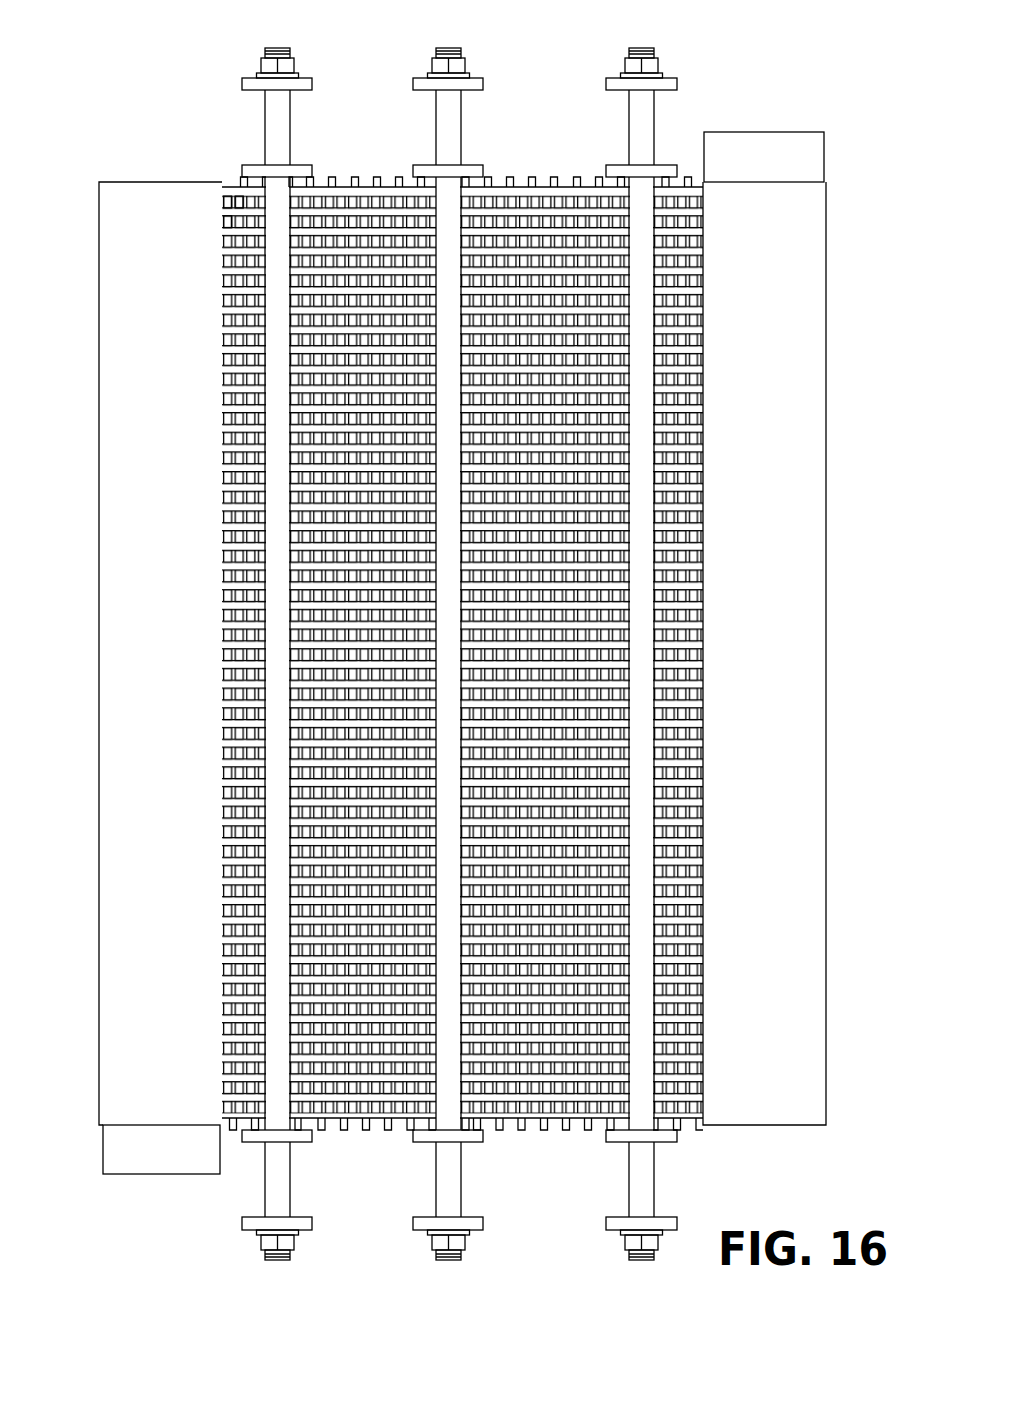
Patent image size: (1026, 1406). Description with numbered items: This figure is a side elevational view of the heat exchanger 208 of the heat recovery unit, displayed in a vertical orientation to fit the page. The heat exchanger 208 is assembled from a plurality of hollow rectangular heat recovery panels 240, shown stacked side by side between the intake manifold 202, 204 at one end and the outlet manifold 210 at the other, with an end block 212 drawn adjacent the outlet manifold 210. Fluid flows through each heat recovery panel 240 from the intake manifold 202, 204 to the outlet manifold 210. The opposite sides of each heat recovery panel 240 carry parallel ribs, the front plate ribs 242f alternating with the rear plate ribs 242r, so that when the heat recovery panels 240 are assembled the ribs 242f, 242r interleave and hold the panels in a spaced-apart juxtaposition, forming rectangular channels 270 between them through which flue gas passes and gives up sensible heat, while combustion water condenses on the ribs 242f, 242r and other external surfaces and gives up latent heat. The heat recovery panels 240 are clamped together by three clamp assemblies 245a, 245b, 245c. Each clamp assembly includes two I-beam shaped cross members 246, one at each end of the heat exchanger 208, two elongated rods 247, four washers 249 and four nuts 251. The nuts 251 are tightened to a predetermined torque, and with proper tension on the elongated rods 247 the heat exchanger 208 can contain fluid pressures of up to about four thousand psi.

The intake manifold 202 is at (173, 1158).
The intake manifold 204 is at (178, 195).
The heat exchanger 208 is at (773, 70).
The outlet manifold 210 is at (748, 1110).
The upper end block 212 is at (745, 147).
The heat recovery panel 240 is at (318, 190).
The front plate ribs 242f is at (246, 199).
The rear plate ribs 242r is at (236, 203).
The rectangular channel 270 is at (234, 210).
The clamp assembly 245a is at (629, 1162).
The clamp assembly 245b is at (461, 1180).
The clamp assembly 245c is at (289, 1183).
The cross member 246 is at (311, 83).
The elongated rod 247 is at (448, 50).
The washer 249 is at (477, 75).
The nut 251 is at (460, 68).